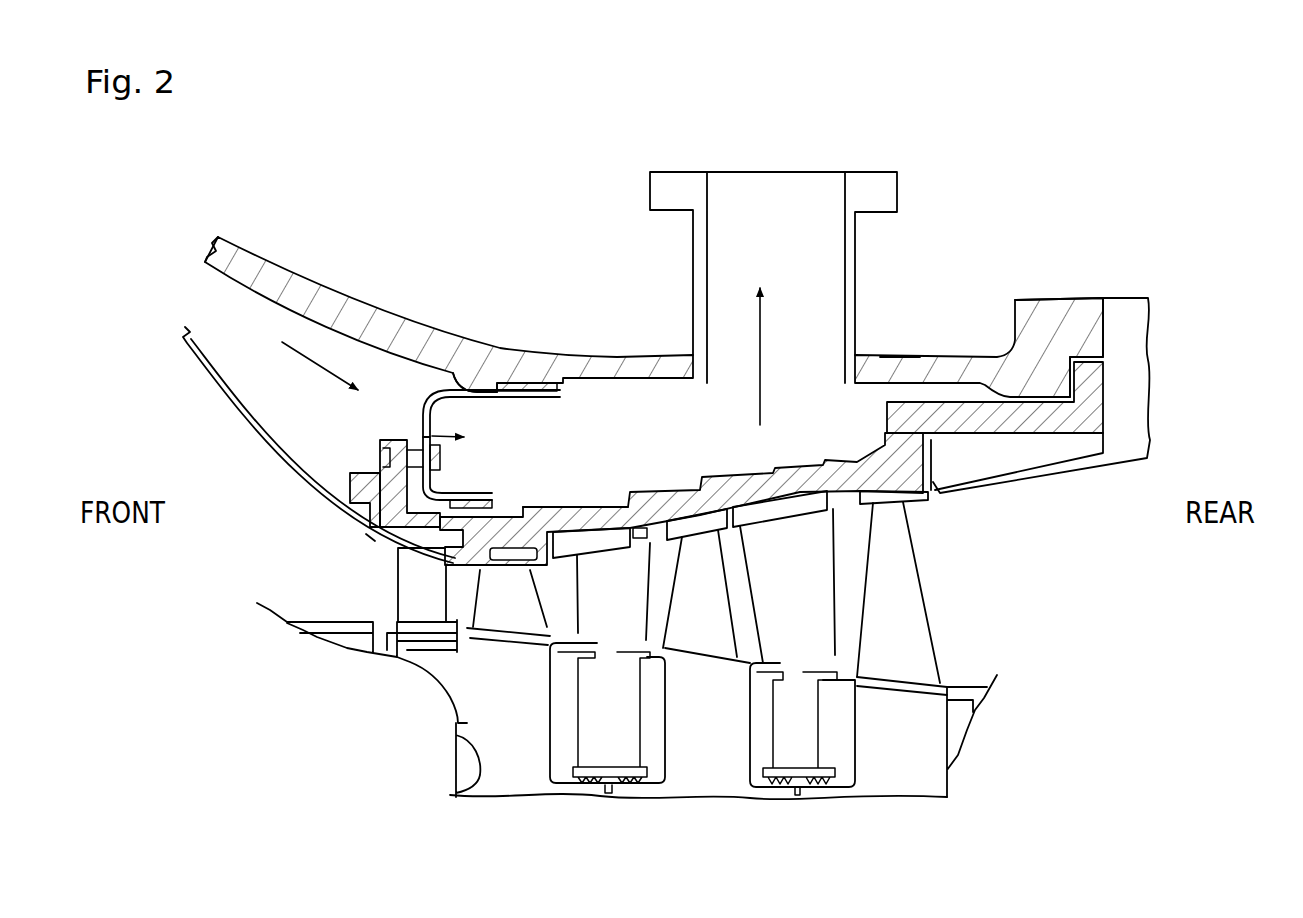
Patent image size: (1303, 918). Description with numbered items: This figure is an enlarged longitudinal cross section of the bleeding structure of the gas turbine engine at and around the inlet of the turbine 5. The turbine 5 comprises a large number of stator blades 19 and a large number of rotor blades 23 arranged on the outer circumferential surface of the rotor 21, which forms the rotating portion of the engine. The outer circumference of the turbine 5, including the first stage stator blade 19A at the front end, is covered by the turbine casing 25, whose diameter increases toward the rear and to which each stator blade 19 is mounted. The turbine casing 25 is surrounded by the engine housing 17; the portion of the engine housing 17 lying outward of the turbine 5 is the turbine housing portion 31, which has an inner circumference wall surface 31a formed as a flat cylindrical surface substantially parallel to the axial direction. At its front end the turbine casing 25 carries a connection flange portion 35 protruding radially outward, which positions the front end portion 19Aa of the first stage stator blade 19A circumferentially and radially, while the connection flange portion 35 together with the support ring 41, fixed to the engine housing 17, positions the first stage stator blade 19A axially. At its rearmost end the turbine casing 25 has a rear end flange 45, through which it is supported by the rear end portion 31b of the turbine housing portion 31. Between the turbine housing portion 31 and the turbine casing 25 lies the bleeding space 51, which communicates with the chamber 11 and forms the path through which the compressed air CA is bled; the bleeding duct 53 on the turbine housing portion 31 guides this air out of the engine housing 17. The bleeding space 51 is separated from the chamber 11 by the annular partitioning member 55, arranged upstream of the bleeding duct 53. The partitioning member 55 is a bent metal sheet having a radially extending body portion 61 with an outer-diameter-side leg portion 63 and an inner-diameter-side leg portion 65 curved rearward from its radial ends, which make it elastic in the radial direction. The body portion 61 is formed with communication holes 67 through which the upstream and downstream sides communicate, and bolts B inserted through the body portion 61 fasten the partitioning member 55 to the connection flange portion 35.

The turbine 5 is at (925, 546).
The chamber 11 is at (258, 334).
The engine housing 17 is at (280, 284).
The stator blade 19 is at (618, 583).
The first stage stator blade 19A is at (408, 592).
The front end portion of the first stage stator blade 19Aa is at (370, 538).
The rotor 21 is at (915, 785).
The rotor blade 23 is at (522, 618).
The turbine casing 25 is at (573, 510).
The turbine housing portion 31 is at (617, 360).
The inner circumference wall surface 31a is at (902, 385).
The rear end portion of the turbine housing portion 31b is at (1071, 312).
The connection flange portion 35 is at (380, 441).
The support ring 41 is at (348, 460).
The rear end flange 45 is at (1093, 398).
The bleeding space 51 is at (692, 433).
The bleeding duct 53 is at (857, 268).
The partitioning member 55 is at (443, 390).
The body portion 61 is at (450, 406).
The outer-diameter-side leg portion 63 is at (527, 392).
The inner-diameter-side leg portion 65 is at (455, 508).
The communication hole 67 is at (428, 437).
The bolt B is at (440, 458).
The compressed air CA is at (316, 364).